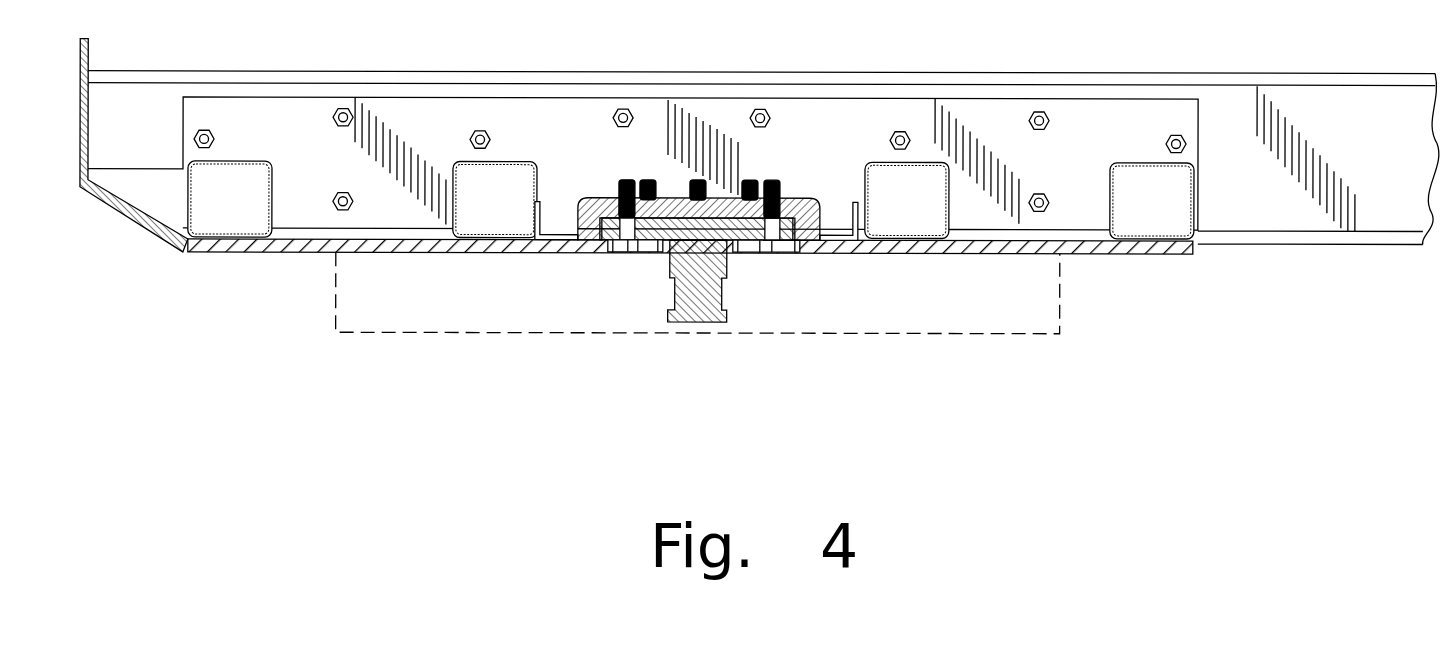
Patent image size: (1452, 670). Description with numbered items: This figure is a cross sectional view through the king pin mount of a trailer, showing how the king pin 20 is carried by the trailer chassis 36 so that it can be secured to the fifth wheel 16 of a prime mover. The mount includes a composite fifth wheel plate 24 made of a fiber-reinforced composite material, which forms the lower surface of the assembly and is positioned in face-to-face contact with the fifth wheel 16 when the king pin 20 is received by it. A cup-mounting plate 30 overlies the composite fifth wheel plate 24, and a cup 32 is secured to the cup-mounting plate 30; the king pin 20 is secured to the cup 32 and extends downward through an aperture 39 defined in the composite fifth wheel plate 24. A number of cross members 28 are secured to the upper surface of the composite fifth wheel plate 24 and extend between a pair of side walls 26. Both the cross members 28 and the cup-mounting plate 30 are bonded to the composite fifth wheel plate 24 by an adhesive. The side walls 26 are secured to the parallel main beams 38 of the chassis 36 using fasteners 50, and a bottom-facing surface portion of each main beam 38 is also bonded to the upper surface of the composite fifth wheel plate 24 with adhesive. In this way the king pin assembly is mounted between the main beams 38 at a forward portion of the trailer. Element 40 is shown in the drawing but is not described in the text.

The fifth wheel 16 is at (1063, 303).
The king pin 20 is at (713, 292).
The composite fifth wheel plate 24 is at (217, 252).
The side walls 26 is at (442, 115).
The cross members 28 is at (227, 160).
The cup-mounting plate 30 is at (555, 224).
The cup 32 is at (596, 199).
The chassis 36 is at (180, 96).
The main beams 38 is at (1372, 205).
The aperture 39 is at (672, 222).
The end flange 40 is at (92, 52).
The fasteners 50 is at (1050, 125).